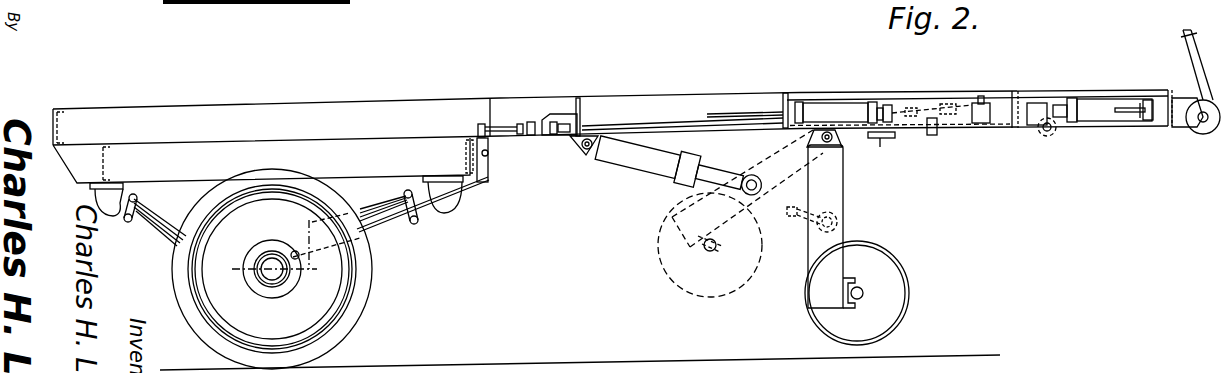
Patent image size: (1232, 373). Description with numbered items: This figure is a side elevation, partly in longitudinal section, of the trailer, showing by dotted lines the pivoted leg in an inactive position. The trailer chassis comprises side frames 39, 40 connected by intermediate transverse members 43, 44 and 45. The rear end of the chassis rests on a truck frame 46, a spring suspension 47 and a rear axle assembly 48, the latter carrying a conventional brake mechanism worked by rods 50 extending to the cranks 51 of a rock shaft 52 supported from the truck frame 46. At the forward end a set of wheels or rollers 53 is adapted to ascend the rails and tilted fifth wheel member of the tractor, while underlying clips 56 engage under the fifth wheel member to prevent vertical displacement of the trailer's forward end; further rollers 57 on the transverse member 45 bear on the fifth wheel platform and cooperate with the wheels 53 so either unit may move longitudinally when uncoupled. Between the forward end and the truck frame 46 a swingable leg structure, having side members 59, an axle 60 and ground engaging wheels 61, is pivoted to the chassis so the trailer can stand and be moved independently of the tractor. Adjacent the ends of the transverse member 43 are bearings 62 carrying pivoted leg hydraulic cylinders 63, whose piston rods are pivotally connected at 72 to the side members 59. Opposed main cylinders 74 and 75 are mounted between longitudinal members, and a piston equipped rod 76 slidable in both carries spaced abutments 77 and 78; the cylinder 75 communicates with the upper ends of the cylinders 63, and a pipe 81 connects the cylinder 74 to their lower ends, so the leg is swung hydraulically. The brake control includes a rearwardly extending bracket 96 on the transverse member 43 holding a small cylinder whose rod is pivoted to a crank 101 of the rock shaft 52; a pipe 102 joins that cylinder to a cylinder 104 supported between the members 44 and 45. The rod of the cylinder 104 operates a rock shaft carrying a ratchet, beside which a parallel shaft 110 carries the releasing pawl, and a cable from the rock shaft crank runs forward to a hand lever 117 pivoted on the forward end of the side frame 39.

The side frame 39 is at (673, 100).
The side frame 40 is at (377, 113).
The intermediate transverse member 43 is at (582, 100).
The intermediate transverse member 44 is at (783, 100).
The intermediate transverse member 45 is at (1003, 92).
The truck frame 46 is at (263, 177).
The spring suspension 47 is at (160, 230).
The rear axle assembly 48 is at (270, 276).
The rods 50 is at (465, 190).
The cranks 51 is at (493, 170).
The rock shaft 52 is at (488, 155).
The wheels or rollers 53 is at (1203, 130).
The clips 56 is at (878, 139).
The wheels or rollers 57 is at (1042, 136).
The side members 59 is at (835, 185).
The axle 60 is at (857, 278).
The ground engaging wheels 61 is at (892, 287).
The bearings 62 is at (585, 152).
The leg hydraulic cylinder 63 is at (636, 160).
The pivotal connection 72 is at (750, 176).
The main cylinder 74 is at (828, 108).
The main cylinder 75 is at (1102, 112).
The piston equipped rod 76 is at (925, 110).
The abutment 77 is at (982, 102).
The abutment 78 is at (1040, 102).
The pipe 81 is at (755, 118).
The bracket 96 is at (552, 113).
The crank 101 is at (490, 142).
The pipe 102 is at (630, 125).
The cylinder 104 is at (932, 136).
The shaft 110 is at (507, 100).
The hand lever 117 is at (1193, 60).